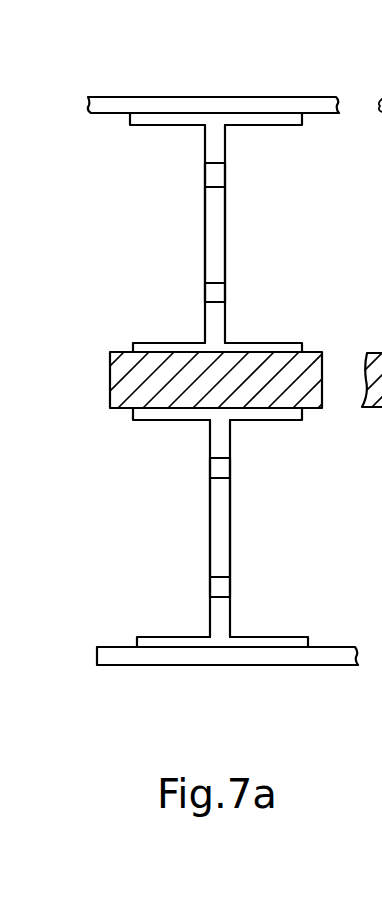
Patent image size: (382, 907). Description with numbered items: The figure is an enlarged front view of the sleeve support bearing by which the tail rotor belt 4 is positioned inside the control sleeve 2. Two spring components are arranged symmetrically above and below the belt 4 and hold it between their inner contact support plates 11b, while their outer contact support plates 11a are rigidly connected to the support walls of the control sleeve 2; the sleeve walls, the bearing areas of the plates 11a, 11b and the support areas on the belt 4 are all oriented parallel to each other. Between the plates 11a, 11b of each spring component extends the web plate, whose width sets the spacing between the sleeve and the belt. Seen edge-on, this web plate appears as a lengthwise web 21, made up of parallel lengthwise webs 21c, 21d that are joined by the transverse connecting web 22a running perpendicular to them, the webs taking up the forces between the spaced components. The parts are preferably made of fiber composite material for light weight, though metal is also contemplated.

The control sleeve 2 is at (172, 105).
The belt 4 is at (120, 384).
The contact support plate 11a is at (133, 125).
The contact support plate 11b is at (133, 343).
The lengthwise web 21 is at (222, 620).
The lengthwise web 21c is at (212, 150).
The lengthwise web 21d is at (218, 318).
The connecting web 22a is at (212, 233).